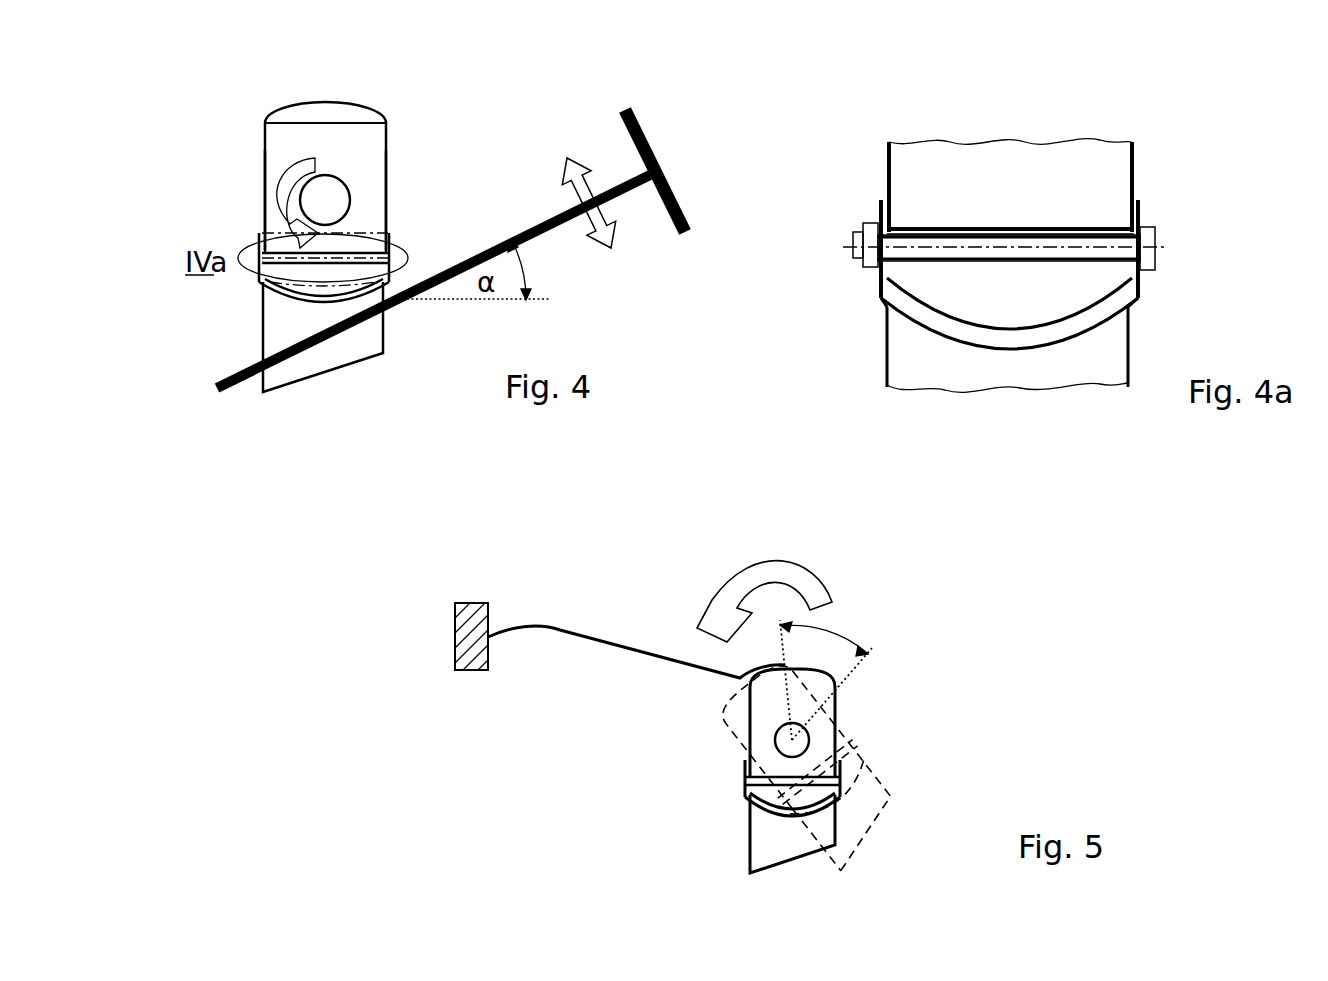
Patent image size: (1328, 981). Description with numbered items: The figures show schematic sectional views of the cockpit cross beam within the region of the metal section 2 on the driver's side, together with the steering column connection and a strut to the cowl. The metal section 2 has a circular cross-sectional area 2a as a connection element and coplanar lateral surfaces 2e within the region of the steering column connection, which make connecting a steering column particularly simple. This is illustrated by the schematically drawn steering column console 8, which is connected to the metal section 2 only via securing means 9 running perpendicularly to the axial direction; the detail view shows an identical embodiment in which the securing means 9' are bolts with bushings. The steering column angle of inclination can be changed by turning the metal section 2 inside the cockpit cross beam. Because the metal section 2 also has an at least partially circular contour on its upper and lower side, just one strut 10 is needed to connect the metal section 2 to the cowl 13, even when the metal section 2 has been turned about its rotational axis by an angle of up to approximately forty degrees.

In FIG. 4, the metal section 2 is at (355, 104).
In FIG. 4a, the metal section 2 is at (1080, 158).
In FIG. 5, the metal section 2 is at (838, 712).
In FIG. 4, the circular cross-sectional area 2a is at (325, 200).
In FIG. 4, the coplanar lateral surfaces 2e is at (264, 197).
In FIG. 4a, the coplanar lateral surfaces 2e is at (886, 154).
In FIG. 4, the steering column console 8 is at (262, 338).
In FIG. 4a, the steering column console 8 is at (883, 362).
In FIG. 4, the securing means 9 is at (348, 262).
In FIG. 4a, the securing means 9' is at (1004, 256).
In FIG. 5, the strut 10 is at (548, 627).
In FIG. 5, the cowl 13 is at (470, 652).